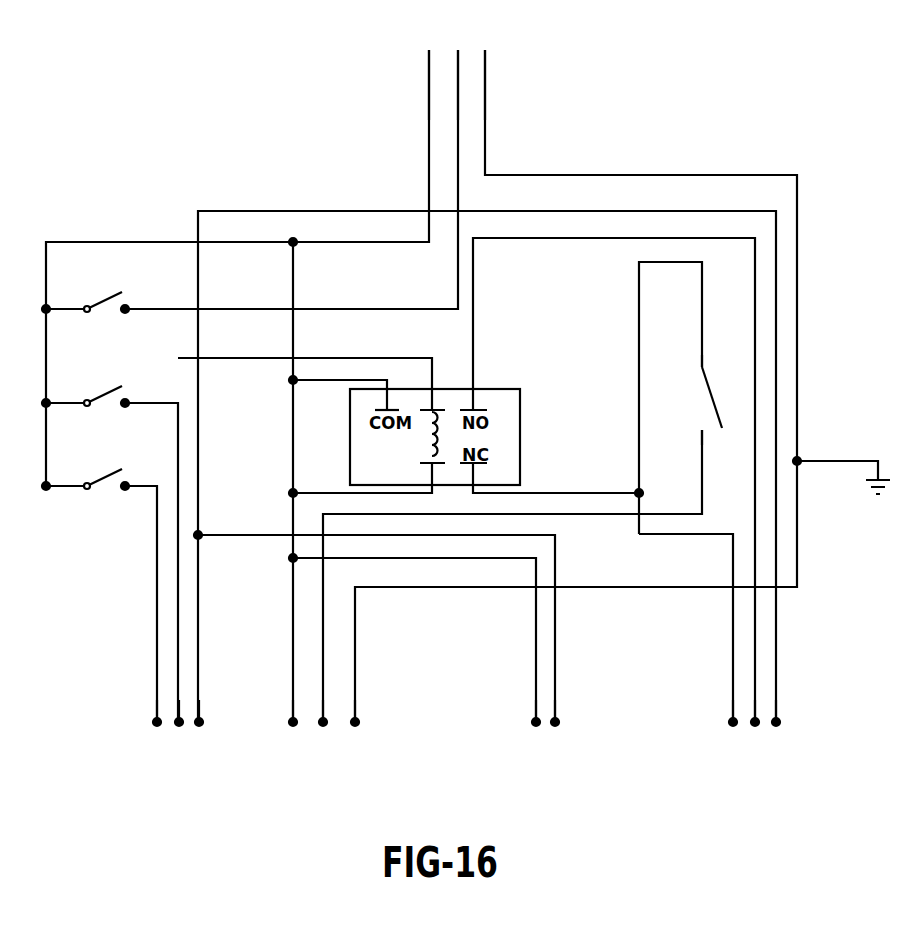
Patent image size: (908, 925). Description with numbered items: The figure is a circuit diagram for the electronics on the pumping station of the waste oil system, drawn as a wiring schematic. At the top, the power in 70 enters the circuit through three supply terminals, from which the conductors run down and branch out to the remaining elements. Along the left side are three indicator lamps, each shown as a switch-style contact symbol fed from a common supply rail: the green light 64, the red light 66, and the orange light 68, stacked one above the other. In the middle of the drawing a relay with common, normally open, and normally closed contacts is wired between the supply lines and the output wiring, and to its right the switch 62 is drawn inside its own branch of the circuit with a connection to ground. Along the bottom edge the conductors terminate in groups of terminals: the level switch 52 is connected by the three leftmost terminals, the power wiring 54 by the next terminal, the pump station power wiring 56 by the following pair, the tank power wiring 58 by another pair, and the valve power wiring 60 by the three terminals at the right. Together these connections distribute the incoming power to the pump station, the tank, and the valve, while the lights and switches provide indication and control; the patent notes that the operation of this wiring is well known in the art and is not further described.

The power in 70 is at (512, 45).
The green light 64 is at (104, 292).
The red light 66 is at (104, 385).
The orange light 68 is at (104, 468).
The switch 62 is at (699, 382).
The level switch 52 is at (173, 733).
The power wiring 54 is at (292, 733).
The pump station power wiring 56 is at (340, 733).
The tank power wiring 58 is at (549, 733).
The valve power wiring 60 is at (753, 733).